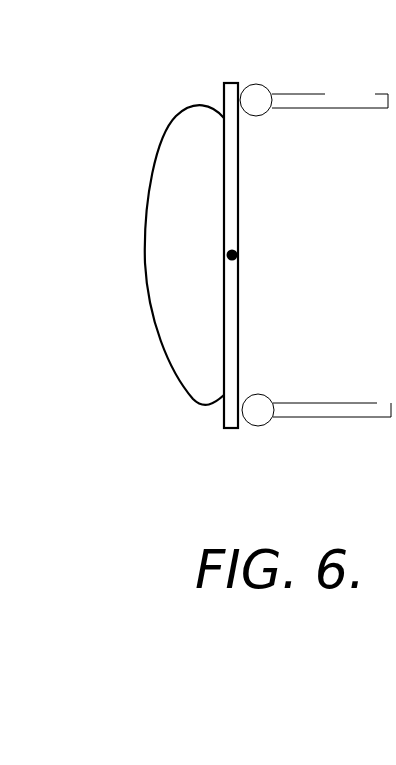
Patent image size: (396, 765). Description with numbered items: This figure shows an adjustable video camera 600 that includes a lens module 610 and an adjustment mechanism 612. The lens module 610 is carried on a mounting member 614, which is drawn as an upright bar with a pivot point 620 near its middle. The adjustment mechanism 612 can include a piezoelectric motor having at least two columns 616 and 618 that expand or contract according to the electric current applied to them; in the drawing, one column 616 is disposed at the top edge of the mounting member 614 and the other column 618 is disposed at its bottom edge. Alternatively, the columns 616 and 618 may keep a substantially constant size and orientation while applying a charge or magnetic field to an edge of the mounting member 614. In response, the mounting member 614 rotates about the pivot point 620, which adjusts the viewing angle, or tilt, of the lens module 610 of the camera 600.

The adjustable video camera 600 is at (104, 83).
The lens module 610 is at (145, 254).
The adjustment mechanism 612 is at (266, 466).
The mounting member 614 is at (230, 82).
The column 616 is at (332, 93).
The column 618 is at (335, 403).
The pivot point 620 is at (237, 255).